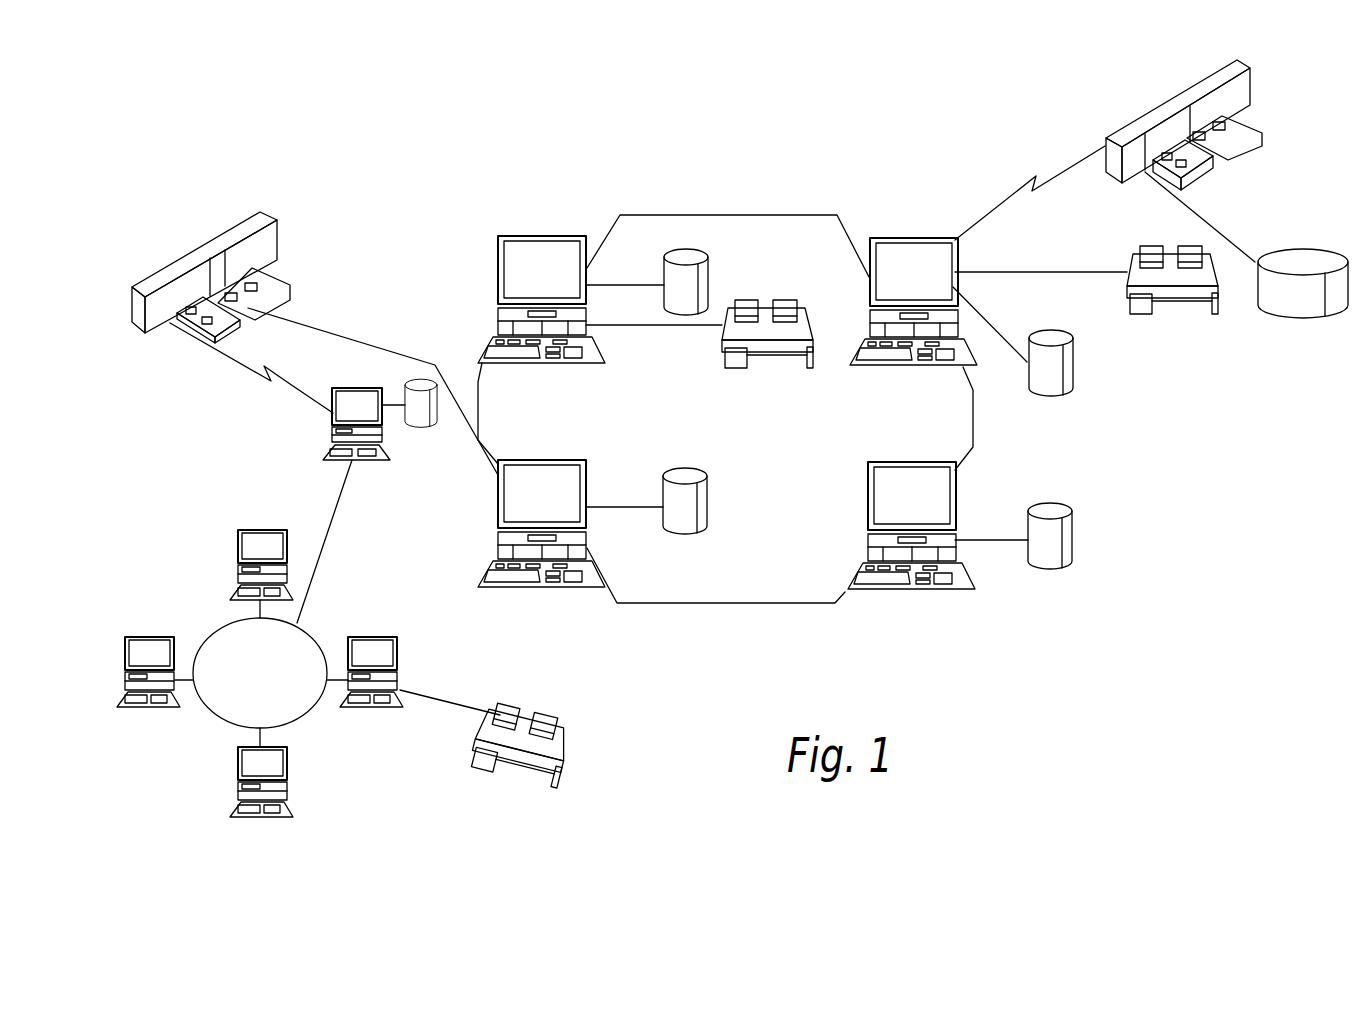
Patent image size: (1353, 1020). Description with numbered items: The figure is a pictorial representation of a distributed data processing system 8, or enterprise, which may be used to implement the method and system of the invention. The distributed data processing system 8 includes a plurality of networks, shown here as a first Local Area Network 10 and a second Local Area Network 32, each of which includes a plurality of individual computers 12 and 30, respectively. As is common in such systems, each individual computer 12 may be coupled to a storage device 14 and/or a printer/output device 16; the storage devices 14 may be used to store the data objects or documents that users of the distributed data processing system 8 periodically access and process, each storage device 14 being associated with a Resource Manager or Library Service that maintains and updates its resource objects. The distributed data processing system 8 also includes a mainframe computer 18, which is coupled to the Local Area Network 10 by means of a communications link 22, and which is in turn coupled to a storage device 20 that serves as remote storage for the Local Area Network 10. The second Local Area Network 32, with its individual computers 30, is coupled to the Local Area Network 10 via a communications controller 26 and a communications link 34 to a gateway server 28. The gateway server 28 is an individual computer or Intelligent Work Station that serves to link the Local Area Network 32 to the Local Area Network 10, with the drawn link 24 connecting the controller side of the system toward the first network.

The distributed data processing system 8 is at (755, 178).
The Local Area Network 10 is at (751, 605).
The individual computer 12 is at (560, 237).
The storage device 14 is at (704, 262).
The printer/output device 16 is at (765, 302).
The mainframe computer 18 is at (1175, 93).
The storage device 20 is at (1328, 256).
The communications link 22 is at (1066, 166).
The communication link 24 is at (358, 338).
The communications controller 26 is at (273, 222).
The gateway server 28 is at (356, 388).
The individual computer 30 is at (272, 530).
The Local Area Network 32 is at (215, 712).
The communications link 34 is at (290, 384).